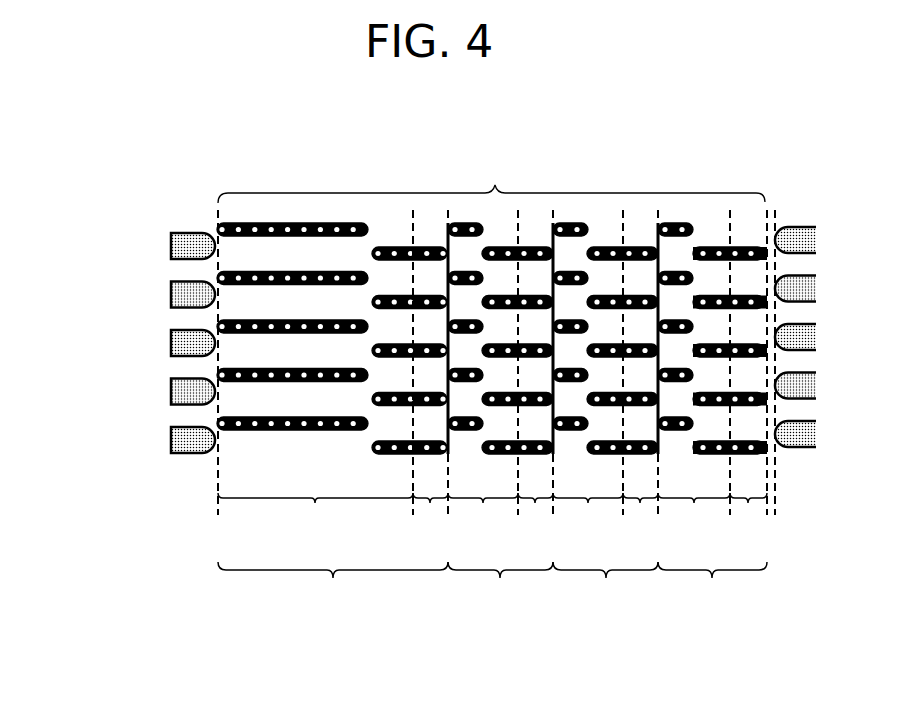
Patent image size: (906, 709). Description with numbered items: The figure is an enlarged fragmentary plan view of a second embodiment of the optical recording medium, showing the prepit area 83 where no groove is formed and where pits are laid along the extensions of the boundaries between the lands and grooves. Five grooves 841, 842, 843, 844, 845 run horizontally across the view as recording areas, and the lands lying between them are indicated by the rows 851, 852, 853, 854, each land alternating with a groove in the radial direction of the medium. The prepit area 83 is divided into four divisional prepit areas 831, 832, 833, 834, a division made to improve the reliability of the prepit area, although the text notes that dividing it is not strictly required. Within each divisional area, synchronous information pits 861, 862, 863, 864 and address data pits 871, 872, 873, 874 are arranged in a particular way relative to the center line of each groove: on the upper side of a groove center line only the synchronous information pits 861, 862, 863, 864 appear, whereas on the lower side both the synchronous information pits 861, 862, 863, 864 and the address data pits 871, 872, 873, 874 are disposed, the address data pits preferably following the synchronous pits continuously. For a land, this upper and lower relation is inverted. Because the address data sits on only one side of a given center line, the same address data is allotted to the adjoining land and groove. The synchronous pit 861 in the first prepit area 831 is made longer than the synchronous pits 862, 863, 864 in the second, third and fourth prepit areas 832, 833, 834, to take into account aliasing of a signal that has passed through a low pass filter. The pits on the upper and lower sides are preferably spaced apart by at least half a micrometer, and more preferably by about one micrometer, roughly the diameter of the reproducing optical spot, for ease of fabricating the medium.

The prepit area 83 is at (491, 173).
The first prepit area 831 is at (333, 590).
The second prepit area 832 is at (500, 590).
The third prepit area 833 is at (605, 590).
The fourth prepit area 834 is at (712, 590).
The groove 841 is at (163, 245).
The groove 842 is at (163, 299).
The groove 843 is at (163, 353).
The groove 844 is at (163, 407).
The groove 845 is at (163, 460).
The first offset wiring line 851 is at (163, 272).
The second offset wiring line 852 is at (163, 326).
The third offset wiring line 853 is at (163, 380).
The fourth offset wiring line 854 is at (163, 433).
The synchronous information pit 861 is at (315, 379).
The synchronous information pit 862 is at (483, 379).
The synchronous information pit 863 is at (588, 379).
The synchronous information pit 864 is at (694, 379).
The address data pit 871 is at (428, 379).
The address data pit 872 is at (533, 379).
The address data pit 873 is at (640, 379).
The address data pit 874 is at (747, 379).